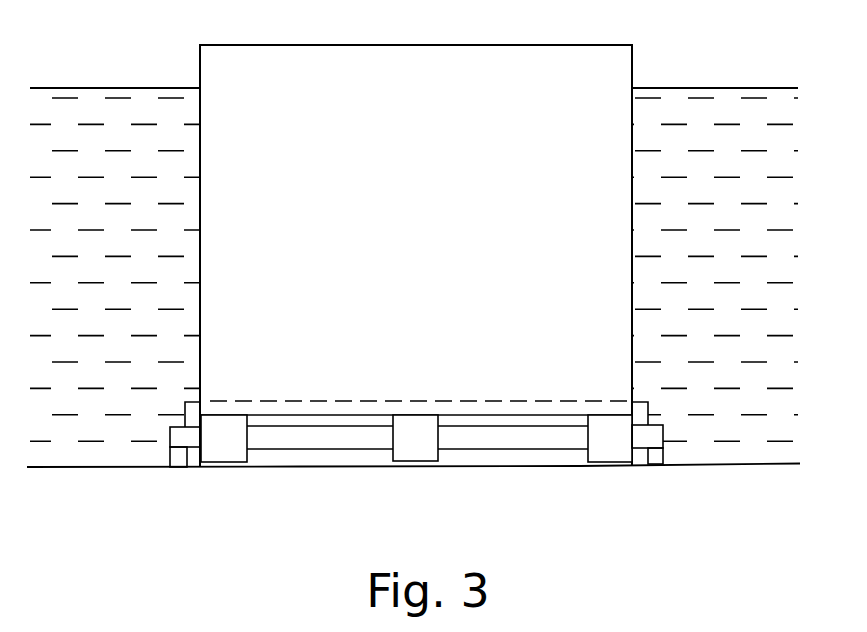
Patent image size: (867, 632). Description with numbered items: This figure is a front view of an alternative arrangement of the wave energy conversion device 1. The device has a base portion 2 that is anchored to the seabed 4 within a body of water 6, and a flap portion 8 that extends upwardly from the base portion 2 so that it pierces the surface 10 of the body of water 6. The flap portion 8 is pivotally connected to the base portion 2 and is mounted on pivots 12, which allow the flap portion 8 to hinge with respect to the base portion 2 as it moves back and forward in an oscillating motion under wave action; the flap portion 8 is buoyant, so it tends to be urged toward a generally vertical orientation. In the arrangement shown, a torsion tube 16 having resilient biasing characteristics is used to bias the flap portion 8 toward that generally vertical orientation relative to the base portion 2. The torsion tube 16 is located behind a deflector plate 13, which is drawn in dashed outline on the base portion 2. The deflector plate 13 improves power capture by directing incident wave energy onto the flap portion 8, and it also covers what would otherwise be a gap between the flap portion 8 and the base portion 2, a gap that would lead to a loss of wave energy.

The wave energy conversion device 1 is at (150, 263).
The base portion 2 is at (182, 455).
The seabed 4 is at (777, 463).
The body of water 6 is at (717, 290).
The flap portion 8 is at (507, 98).
The surface 10 is at (128, 87).
The pivots 12 is at (228, 447).
The deflector plate 13 is at (220, 400).
The torsion tube 16 is at (173, 440).